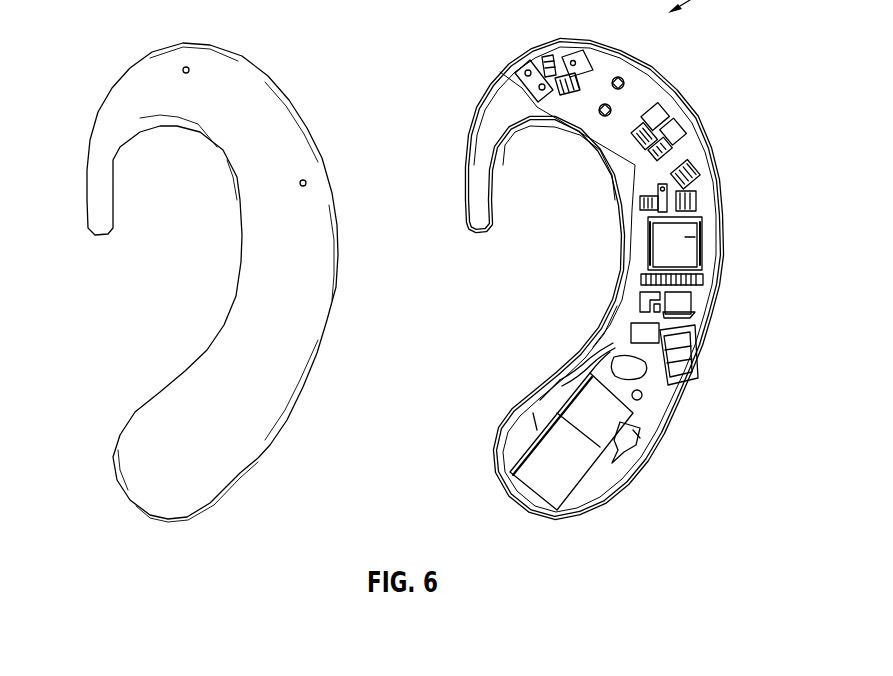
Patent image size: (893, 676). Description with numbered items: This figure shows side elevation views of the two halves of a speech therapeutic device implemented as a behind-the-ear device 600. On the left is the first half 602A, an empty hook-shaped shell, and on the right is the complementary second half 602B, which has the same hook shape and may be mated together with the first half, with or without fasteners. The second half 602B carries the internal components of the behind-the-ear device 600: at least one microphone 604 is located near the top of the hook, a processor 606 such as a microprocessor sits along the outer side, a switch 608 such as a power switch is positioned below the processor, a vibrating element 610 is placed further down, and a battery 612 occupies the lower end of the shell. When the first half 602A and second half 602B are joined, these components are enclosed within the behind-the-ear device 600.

The behind-the-ear device 600 is at (688, 94).
The first half 602A is at (277, 84).
The second half 602B is at (698, 150).
The microphone 604 is at (583, 55).
The processor 606 is at (712, 252).
The switch 608 is at (697, 370).
The vibrating element 610 is at (633, 430).
The battery 612 is at (577, 470).